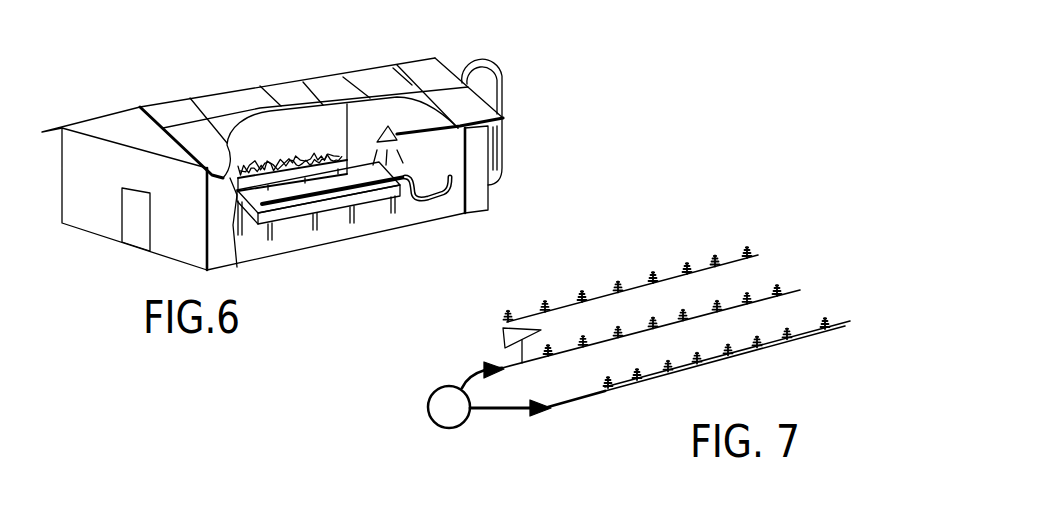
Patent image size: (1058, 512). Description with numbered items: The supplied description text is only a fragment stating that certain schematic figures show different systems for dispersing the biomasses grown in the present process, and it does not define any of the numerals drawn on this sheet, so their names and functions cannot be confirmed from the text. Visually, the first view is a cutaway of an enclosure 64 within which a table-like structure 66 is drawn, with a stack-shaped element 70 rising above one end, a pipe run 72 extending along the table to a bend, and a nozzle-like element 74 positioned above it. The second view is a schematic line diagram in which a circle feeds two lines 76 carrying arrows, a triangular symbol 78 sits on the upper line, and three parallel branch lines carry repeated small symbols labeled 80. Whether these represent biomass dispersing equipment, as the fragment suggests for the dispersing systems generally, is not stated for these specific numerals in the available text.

In FIG. 6, the dryer building / enclosure 64 is at (235, 97).
In FIG. 6, the conveyor table 66 is at (298, 210).
In FIG. 6, the exhaust stack 70 is at (502, 82).
In FIG. 6, the burner pipe 72 is at (348, 190).
In FIG. 6, the sprinkler head 74 is at (398, 137).
In FIG. 7, the supply pipe 76 is at (465, 384).
In FIG. 7, the valve 78 is at (505, 332).
In FIG. 7, the sprinkler heads 80 is at (658, 374).